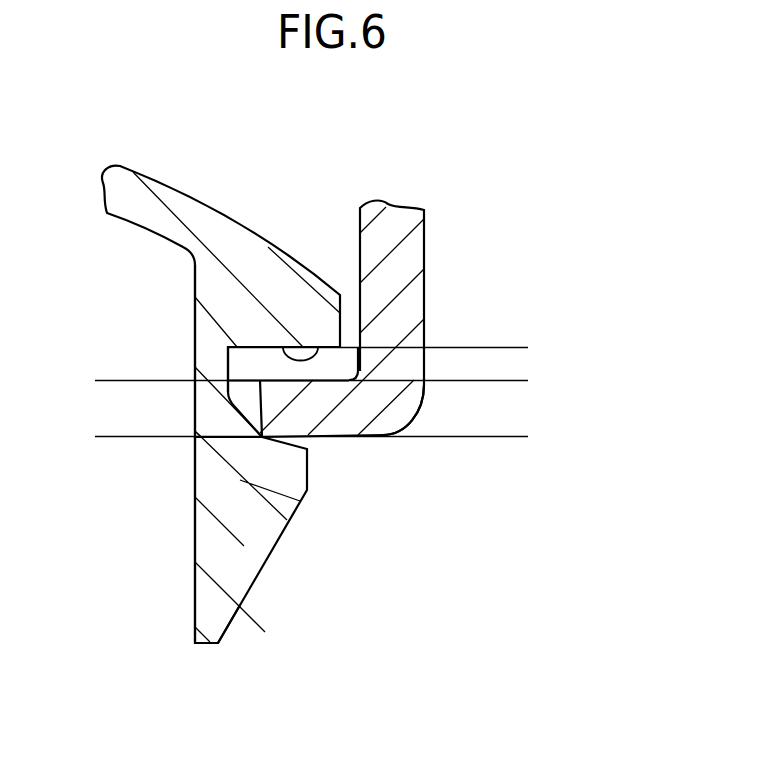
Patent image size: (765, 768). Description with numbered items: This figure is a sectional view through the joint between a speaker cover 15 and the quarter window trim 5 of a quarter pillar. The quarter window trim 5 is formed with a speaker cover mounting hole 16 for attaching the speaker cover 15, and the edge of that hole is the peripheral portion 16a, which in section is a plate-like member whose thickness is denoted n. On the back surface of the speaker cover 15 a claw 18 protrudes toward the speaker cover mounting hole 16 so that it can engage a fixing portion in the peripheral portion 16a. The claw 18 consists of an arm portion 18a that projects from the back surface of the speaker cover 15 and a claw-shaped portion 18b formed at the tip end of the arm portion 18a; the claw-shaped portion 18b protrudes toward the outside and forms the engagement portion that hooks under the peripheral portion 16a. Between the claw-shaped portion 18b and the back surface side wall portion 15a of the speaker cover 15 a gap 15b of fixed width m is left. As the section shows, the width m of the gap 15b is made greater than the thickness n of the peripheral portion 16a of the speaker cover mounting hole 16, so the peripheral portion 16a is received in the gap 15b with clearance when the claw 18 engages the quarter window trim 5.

The quarter window trim 5 is at (424, 232).
The speaker cover 15 is at (175, 188).
The back surface side wall portion 15a is at (318, 348).
The gap 15b is at (253, 363).
The speaker cover mounting hole 16 is at (425, 288).
The peripheral portion 16a is at (348, 428).
The claw 18 is at (272, 552).
The arm portion 18a is at (207, 345).
The claw-shaped portion 18b is at (233, 620).
The width of the gap m is at (488, 348).
The thickness of the peripheral portion n is at (120, 381).